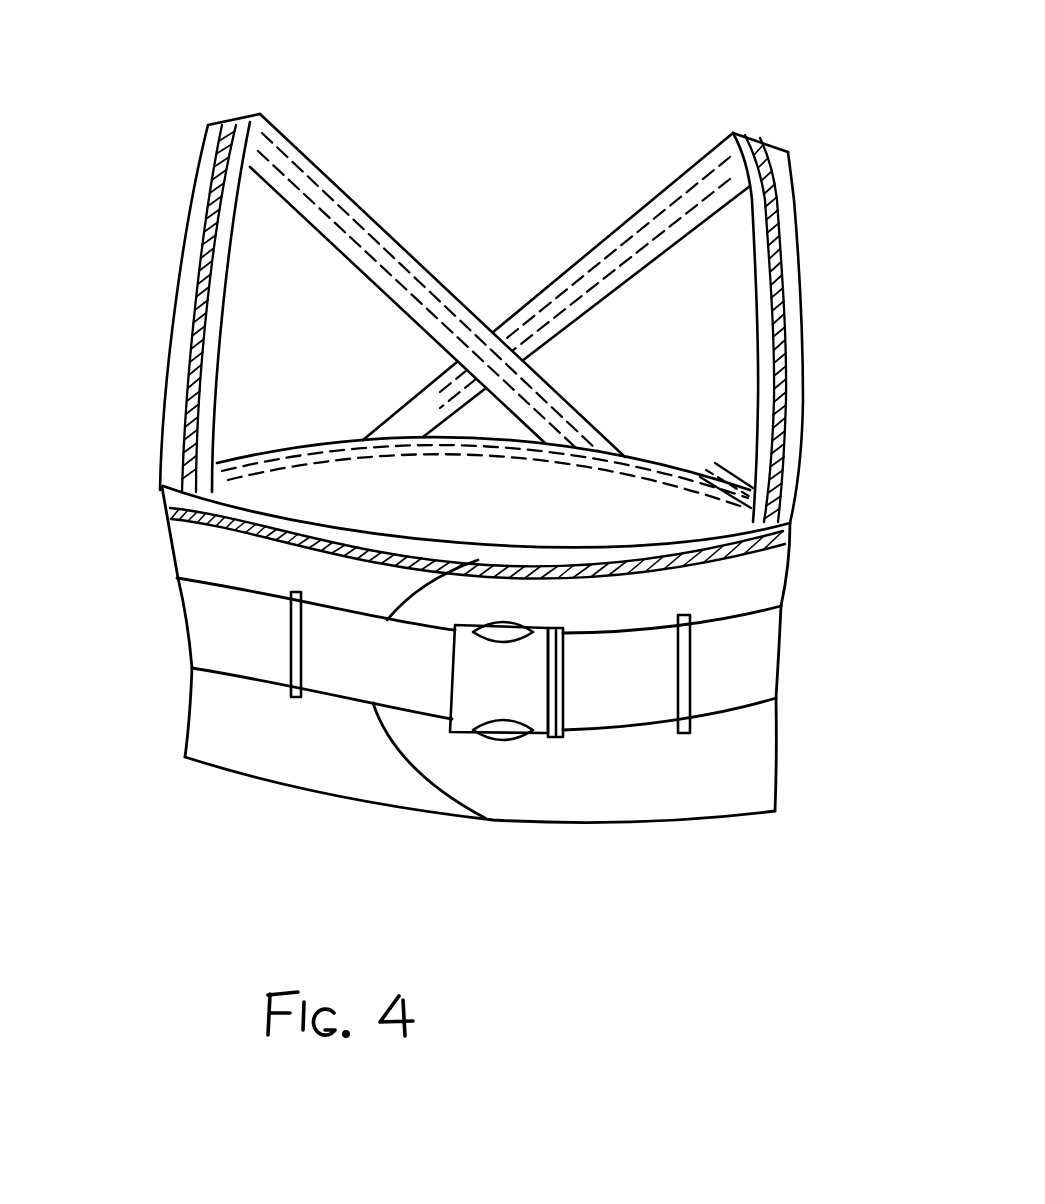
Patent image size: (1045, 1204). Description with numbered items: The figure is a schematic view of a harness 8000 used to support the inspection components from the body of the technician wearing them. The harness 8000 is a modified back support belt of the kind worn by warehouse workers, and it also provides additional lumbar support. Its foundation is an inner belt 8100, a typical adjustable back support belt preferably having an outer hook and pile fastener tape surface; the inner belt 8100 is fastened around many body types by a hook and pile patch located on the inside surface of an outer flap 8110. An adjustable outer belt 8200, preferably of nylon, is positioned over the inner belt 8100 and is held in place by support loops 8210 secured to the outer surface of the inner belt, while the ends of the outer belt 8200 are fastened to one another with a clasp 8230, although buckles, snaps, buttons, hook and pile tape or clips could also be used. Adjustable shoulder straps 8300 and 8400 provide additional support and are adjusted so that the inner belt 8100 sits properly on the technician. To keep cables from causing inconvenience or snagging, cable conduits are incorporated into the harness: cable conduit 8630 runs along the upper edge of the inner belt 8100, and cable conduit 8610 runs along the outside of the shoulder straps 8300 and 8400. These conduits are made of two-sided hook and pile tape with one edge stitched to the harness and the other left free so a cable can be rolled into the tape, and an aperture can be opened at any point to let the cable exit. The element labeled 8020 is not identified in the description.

The harness 8000 is at (450, 64).
The cable conduit 8610 is at (198, 283).
The shoulder strap 8400 is at (233, 265).
The shoulder strap 8300 is at (806, 292).
The right shoulder strap edge binding 8020 is at (788, 366).
The cable conduit 8630 is at (573, 572).
The inner belt 8100 is at (750, 582).
The outer belt 8200 is at (740, 665).
The support loops 8210 is at (288, 692).
The clasp 8230 is at (473, 680).
The outer flap 8110 is at (377, 710).